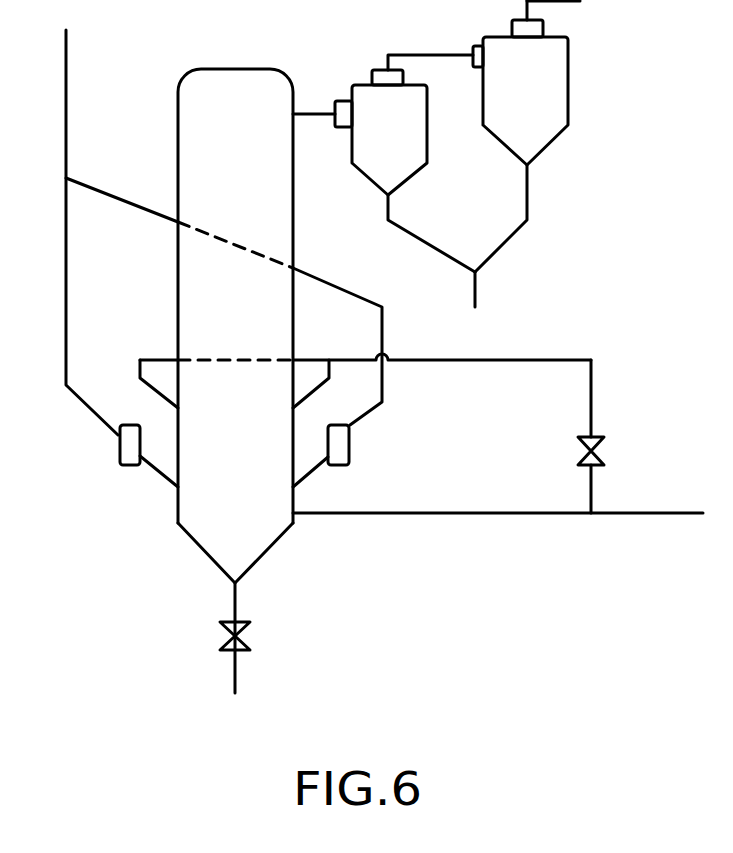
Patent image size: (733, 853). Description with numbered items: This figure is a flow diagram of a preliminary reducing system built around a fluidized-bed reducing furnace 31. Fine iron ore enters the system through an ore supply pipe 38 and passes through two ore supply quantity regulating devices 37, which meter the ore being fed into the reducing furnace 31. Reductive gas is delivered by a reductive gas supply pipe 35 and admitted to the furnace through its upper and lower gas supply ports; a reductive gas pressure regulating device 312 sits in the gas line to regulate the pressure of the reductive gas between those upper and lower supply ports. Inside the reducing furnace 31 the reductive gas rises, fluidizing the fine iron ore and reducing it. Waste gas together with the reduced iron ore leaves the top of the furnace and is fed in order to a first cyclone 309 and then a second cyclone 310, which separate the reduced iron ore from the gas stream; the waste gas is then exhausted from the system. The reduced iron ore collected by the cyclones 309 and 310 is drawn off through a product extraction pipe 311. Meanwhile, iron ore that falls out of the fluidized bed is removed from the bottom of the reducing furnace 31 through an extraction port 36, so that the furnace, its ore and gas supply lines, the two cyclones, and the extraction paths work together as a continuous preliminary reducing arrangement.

The reducing furnace 31 is at (245, 69).
The reductive gas supply pipe 35 is at (652, 514).
The extraction port 36 is at (236, 604).
The ore supply quantity regulating device 37 is at (120, 456).
The ore supply pipe 38 is at (66, 102).
The cyclone 309 is at (428, 150).
The cyclone 310 is at (569, 112).
The product extraction pipe 311 is at (477, 290).
The reductive gas pressure regulating device 312 is at (605, 452).